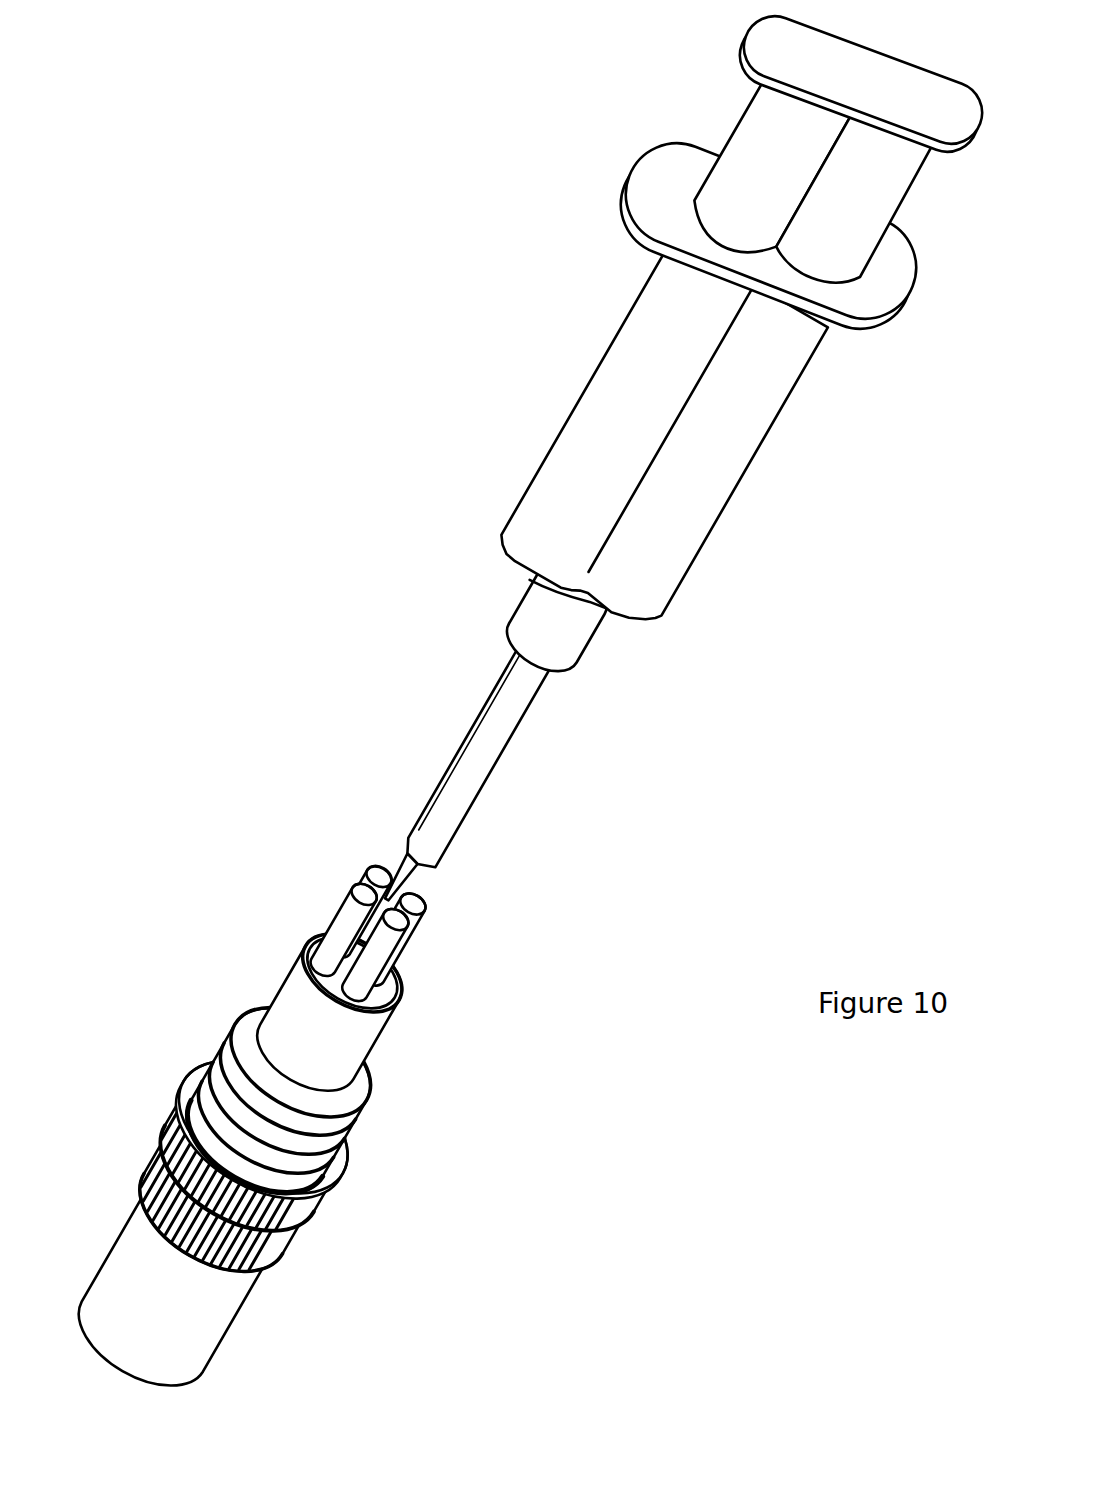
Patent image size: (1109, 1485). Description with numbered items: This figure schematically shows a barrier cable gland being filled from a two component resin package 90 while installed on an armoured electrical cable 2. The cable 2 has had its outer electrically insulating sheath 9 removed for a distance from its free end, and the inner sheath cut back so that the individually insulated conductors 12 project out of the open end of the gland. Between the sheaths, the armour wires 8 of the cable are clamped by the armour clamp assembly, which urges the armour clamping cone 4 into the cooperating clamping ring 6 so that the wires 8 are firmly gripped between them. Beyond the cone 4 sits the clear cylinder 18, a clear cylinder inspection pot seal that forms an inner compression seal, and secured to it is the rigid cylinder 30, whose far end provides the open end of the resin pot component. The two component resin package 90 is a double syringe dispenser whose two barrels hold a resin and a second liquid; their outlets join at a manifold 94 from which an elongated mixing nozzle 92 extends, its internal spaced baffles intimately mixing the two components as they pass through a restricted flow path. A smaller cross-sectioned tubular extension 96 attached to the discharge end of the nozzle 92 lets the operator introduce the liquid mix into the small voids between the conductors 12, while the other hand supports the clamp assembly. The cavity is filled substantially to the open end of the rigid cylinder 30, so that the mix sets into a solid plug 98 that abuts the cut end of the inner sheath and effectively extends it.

The electrical cable 2 is at (343, 1073).
The armour clamping cone 4 is at (193, 1103).
The clamping ring 6 is at (277, 1233).
The armour wires 8 is at (257, 1258).
The outer electrically insulating sheath 9 is at (223, 1295).
The individually insulated conductors 12 is at (343, 903).
The clear cylinder 18 is at (352, 1117).
The rigid cylinder 30 is at (301, 1004).
The two component resin package 90 is at (785, 404).
The mixing nozzle 92 is at (566, 760).
The manifold 94 is at (540, 620).
The tubular extension 96 is at (347, 817).
The solid plug 98 is at (378, 1000).